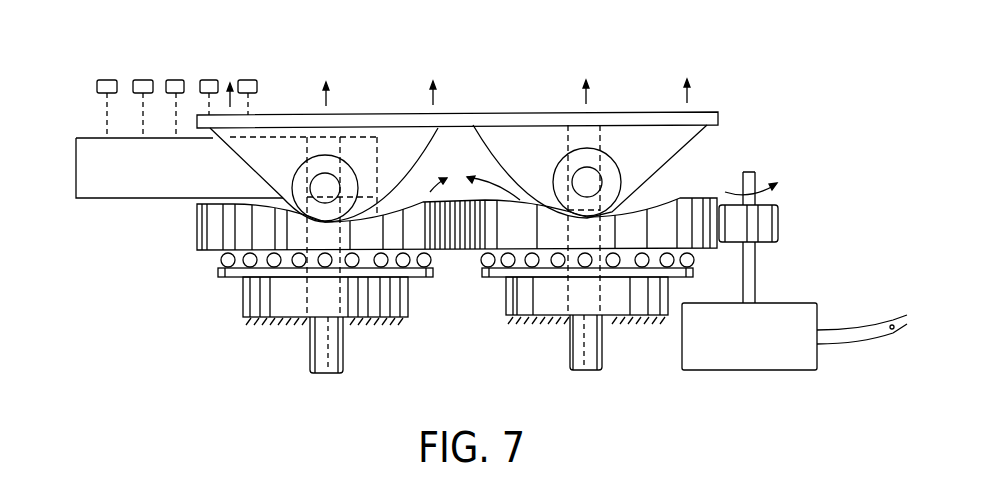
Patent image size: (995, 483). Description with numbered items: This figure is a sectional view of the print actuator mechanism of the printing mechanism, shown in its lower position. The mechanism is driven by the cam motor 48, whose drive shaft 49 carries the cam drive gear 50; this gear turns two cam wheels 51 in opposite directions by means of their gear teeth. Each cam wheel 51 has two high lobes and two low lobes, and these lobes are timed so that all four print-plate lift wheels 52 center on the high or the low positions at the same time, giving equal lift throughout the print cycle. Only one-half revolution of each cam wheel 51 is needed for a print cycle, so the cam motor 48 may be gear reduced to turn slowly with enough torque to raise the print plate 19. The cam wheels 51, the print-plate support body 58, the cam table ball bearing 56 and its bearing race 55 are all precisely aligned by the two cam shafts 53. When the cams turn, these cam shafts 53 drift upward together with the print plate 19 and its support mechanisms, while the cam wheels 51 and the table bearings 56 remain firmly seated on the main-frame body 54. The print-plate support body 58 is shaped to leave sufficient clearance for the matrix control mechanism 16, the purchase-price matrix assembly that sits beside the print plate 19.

The matrix control mechanism 16 is at (76, 186).
The print plate 19 is at (285, 120).
The cam motor 48 is at (795, 362).
The drive shaft 49 is at (755, 285).
The cam drive gear 50 is at (768, 222).
The cam wheel 51 is at (207, 225).
The print-plate lift wheel 52 is at (353, 177).
The cam shaft 53 is at (333, 350).
The main-frame body 54 is at (253, 318).
The bearing race 55 is at (228, 278).
The cam table ball bearing 56 is at (222, 259).
The print-plate support body 58 is at (637, 180).